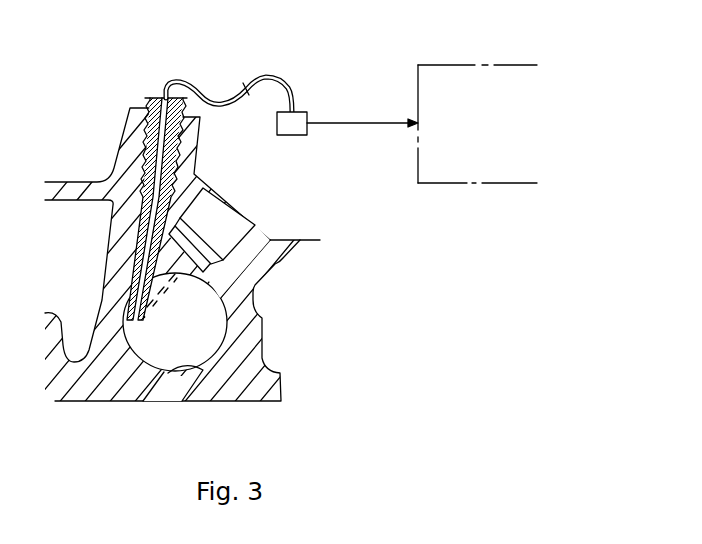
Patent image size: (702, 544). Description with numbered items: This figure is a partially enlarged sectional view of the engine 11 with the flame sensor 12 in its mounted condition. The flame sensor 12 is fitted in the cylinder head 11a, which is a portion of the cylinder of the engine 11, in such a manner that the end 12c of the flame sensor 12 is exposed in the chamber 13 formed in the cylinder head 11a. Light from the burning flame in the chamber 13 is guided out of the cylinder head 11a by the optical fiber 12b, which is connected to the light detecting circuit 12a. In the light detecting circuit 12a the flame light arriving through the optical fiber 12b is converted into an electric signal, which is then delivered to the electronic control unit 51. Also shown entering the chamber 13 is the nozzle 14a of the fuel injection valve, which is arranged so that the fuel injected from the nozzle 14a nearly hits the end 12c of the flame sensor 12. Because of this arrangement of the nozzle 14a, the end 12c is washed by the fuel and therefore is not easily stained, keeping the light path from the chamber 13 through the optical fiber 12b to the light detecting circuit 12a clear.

The engine 11 is at (78, 156).
The cylinder head 11a is at (278, 240).
The flame sensor 12 is at (156, 80).
The light detecting circuit 12a is at (293, 130).
The optical fiber 12b is at (294, 91).
The end of the flame sensor 12c is at (134, 326).
The chamber 13 is at (222, 337).
The nozzle of the fuel injection valve 14a is at (240, 217).
The electronic control unit 51 is at (472, 185).